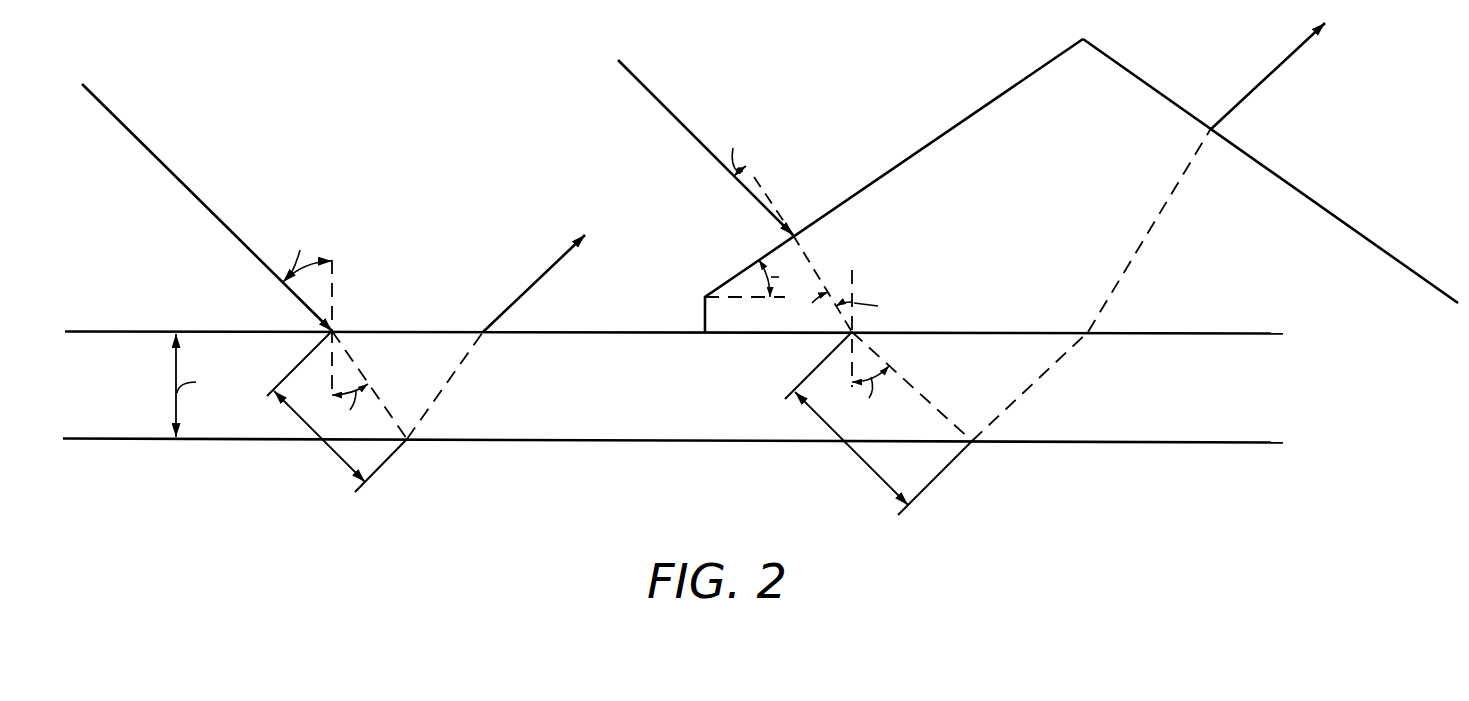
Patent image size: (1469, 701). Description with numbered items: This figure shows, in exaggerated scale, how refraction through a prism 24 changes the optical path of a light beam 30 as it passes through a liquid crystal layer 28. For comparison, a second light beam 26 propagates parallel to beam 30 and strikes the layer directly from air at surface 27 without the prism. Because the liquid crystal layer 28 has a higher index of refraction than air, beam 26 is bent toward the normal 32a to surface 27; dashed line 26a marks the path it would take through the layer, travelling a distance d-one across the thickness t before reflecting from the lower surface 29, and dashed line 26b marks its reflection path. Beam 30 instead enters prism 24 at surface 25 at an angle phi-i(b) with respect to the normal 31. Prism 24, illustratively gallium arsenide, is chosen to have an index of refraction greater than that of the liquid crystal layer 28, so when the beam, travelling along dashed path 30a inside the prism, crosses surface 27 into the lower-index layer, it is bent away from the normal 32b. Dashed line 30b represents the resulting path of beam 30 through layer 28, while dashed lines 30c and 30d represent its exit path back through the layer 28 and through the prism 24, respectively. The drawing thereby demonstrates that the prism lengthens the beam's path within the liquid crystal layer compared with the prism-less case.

The prism 24 is at (1116, 64).
The surface of prism 25 is at (1002, 93).
The light beam 26 is at (143, 144).
The path of beam 26 through layer 26a is at (381, 400).
The reflection path of beam 26 26b is at (460, 367).
The surface 27 is at (643, 331).
The liquid crystal layer 28 is at (665, 432).
The surface of layer 29 is at (542, 439).
The light beam 30 is at (650, 92).
The path of beam 30 through prism 30a is at (814, 264).
The path of beam 30 through layer 30b is at (918, 392).
The exit path of beam 30 through layer 30c is at (1024, 392).
The exit path of beam 30 through prism 30d is at (1146, 238).
The normal 31 is at (764, 182).
The normal to surface 27 32a is at (335, 267).
The normal to surface 27 32b is at (855, 276).